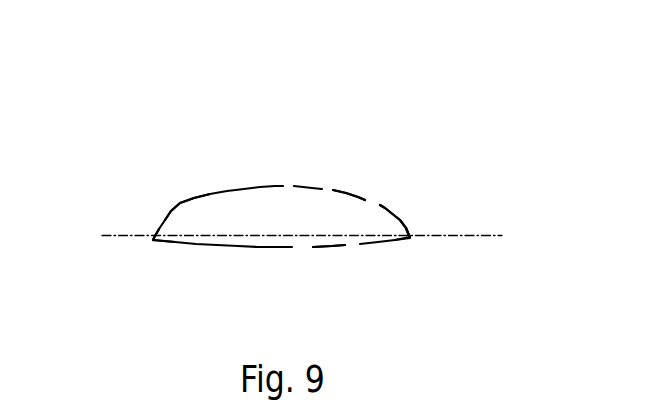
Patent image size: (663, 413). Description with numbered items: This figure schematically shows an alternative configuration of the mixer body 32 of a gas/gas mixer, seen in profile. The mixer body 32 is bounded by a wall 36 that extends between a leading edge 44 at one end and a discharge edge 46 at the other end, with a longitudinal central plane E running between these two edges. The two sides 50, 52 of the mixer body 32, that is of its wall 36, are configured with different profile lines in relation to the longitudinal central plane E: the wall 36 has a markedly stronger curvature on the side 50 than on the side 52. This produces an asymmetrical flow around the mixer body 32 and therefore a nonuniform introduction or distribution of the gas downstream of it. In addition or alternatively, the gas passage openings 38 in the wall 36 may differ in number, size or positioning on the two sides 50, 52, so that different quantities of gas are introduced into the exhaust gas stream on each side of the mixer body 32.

The mixer body 32 is at (529, 193).
The wall 36 is at (186, 201).
The gas passage openings 38 is at (439, 133).
The leading edge 44 is at (153, 240).
The discharge edge 46 is at (410, 238).
The side 50 is at (376, 34).
The side 52 is at (187, 360).
The longitudinal central plane E is at (502, 236).